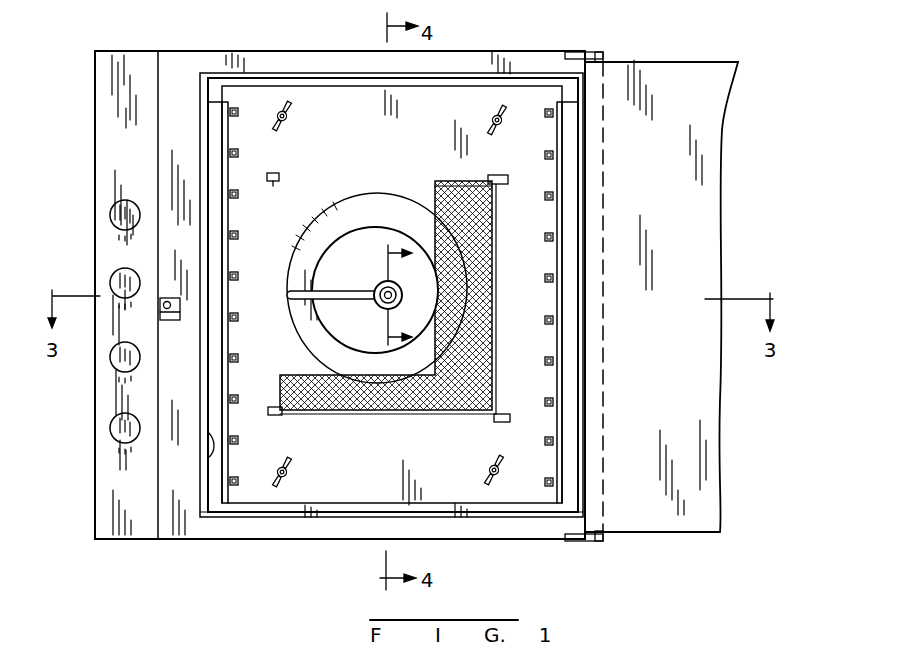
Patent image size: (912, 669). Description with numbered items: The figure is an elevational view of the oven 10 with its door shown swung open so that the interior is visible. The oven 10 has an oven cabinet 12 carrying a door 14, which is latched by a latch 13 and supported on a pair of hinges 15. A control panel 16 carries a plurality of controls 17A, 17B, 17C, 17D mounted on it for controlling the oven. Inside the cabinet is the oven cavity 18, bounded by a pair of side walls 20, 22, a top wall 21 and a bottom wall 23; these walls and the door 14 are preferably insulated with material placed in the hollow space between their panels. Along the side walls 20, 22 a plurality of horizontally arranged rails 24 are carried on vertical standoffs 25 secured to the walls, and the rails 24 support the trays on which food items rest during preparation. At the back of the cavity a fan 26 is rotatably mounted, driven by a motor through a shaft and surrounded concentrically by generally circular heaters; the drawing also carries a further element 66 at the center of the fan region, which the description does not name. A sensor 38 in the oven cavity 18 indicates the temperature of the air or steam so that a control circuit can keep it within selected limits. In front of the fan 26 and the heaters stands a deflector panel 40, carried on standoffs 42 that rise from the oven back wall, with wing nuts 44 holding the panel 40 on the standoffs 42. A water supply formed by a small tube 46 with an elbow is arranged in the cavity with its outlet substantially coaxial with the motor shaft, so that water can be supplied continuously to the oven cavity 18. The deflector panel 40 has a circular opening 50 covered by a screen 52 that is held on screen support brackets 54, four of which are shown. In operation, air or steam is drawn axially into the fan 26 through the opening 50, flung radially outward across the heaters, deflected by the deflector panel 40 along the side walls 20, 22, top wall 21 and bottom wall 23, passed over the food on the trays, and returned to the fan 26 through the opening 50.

The oven 10 is at (419, 276).
The oven cabinet 12 is at (95, 98).
The latch 13 is at (166, 322).
The door 14 is at (718, 84).
The hinges 15 is at (598, 54).
The control panel 16 is at (116, 62).
The control 17A is at (110, 216).
The control 17B is at (110, 283).
The control 17C is at (110, 357).
The control 17D is at (110, 428).
The oven cavity 18 is at (415, 107).
The side wall 20 is at (576, 198).
The top wall 21 is at (340, 82).
The side wall 22 is at (205, 432).
The bottom wall 23 is at (472, 515).
The rails 24 is at (239, 195).
The vertical standoffs 25 is at (222, 126).
The fan 26 is at (395, 233).
The sensor 38 is at (254, 256).
The deflector panel 40 is at (348, 258).
The standoffs 42 is at (493, 116).
The wing nuts 44 is at (503, 121).
The water supply tube 46 is at (358, 298).
The circular opening 50 is at (373, 216).
The screen 52 is at (455, 410).
The screen support brackets 54 is at (274, 181).
The hub 66 is at (385, 288).